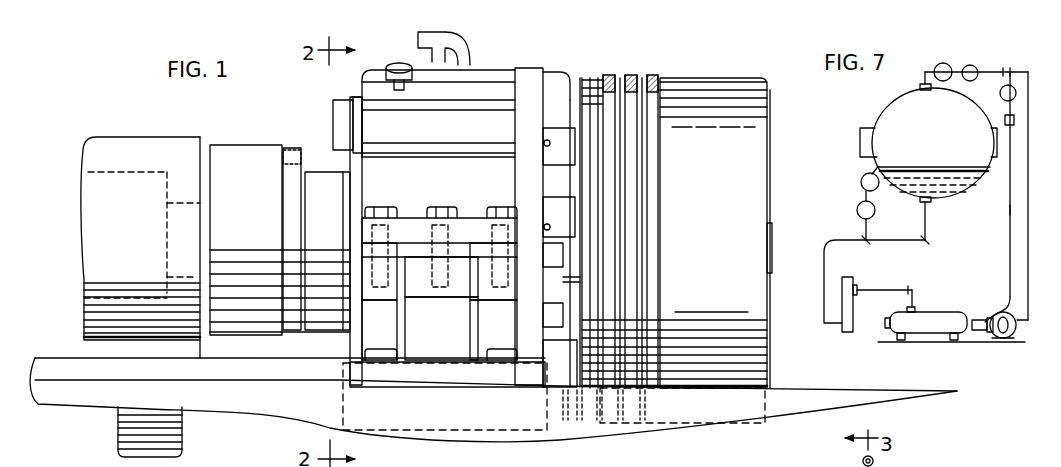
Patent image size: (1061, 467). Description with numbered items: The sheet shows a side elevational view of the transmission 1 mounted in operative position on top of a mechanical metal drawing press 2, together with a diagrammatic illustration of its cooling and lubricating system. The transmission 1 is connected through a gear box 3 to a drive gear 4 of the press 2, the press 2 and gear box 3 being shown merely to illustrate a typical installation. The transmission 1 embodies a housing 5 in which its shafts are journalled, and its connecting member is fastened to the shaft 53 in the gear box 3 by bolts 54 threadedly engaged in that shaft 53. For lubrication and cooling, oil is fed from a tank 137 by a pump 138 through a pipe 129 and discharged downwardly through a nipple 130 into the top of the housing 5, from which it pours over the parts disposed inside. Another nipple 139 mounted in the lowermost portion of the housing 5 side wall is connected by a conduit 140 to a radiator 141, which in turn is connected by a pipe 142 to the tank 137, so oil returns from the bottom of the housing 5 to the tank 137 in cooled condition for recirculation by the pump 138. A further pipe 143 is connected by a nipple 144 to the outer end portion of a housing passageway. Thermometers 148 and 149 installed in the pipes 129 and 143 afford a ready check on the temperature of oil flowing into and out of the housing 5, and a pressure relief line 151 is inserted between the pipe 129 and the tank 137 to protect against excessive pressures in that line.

In FIG. 1, the transmission 1 is at (702, 74).
In FIG. 1, the mechanical metal drawing press 2 is at (829, 391).
In FIG. 1, the gear box 3 is at (160, 130).
In FIG. 1, the drive gear 4 is at (183, 426).
In FIG. 1, the housing 5 is at (384, 60).
In FIG. 7, the housing 5 is at (965, 101).
In FIG. 1, the shaft 53 is at (225, 150).
In FIG. 1, the bolts 54 is at (305, 152).
In FIG. 1, the pipe 129 is at (429, 37).
In FIG. 7, the pipe 129 is at (925, 72).
In FIG. 1, the nipple 130 is at (462, 47).
In FIG. 7, the nipple 130 is at (920, 88).
In FIG. 7, the tank 137 is at (943, 312).
In FIG. 7, the pump 138 is at (995, 338).
In FIG. 7, the nipple 139 is at (927, 200).
In FIG. 7, the conduit 140 is at (826, 268).
In FIG. 7, the radiator 141 is at (853, 303).
In FIG. 7, the pipe 142 is at (886, 290).
In FIG. 7, the pipe 143 is at (860, 224).
In FIG. 7, the nipple 144 is at (875, 167).
In FIG. 7, the thermometer 148 is at (955, 67).
In FIG. 7, the thermometer 149 is at (862, 185).
In FIG. 7, the pressure relief line 151 is at (1010, 212).